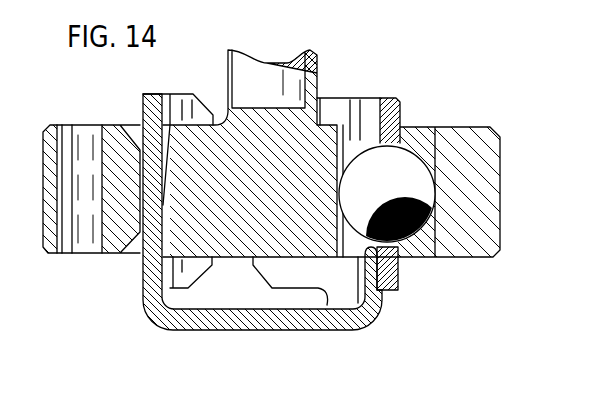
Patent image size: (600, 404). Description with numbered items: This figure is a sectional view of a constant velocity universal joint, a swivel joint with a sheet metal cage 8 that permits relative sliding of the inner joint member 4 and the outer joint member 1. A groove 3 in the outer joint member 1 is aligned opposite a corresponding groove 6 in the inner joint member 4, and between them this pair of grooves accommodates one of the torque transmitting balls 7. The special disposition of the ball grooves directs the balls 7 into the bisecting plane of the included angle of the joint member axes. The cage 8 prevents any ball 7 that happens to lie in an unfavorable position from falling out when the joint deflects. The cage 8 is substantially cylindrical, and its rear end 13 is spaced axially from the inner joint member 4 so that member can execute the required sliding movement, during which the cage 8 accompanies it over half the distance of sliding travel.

The outer joint member 1 is at (487, 178).
The groove 3 is at (420, 243).
The inner joint member 4 is at (312, 130).
The groove 6 is at (358, 137).
The ball 7 is at (405, 163).
The sheet metal cage 8 is at (402, 105).
The rear end 13 is at (227, 317).